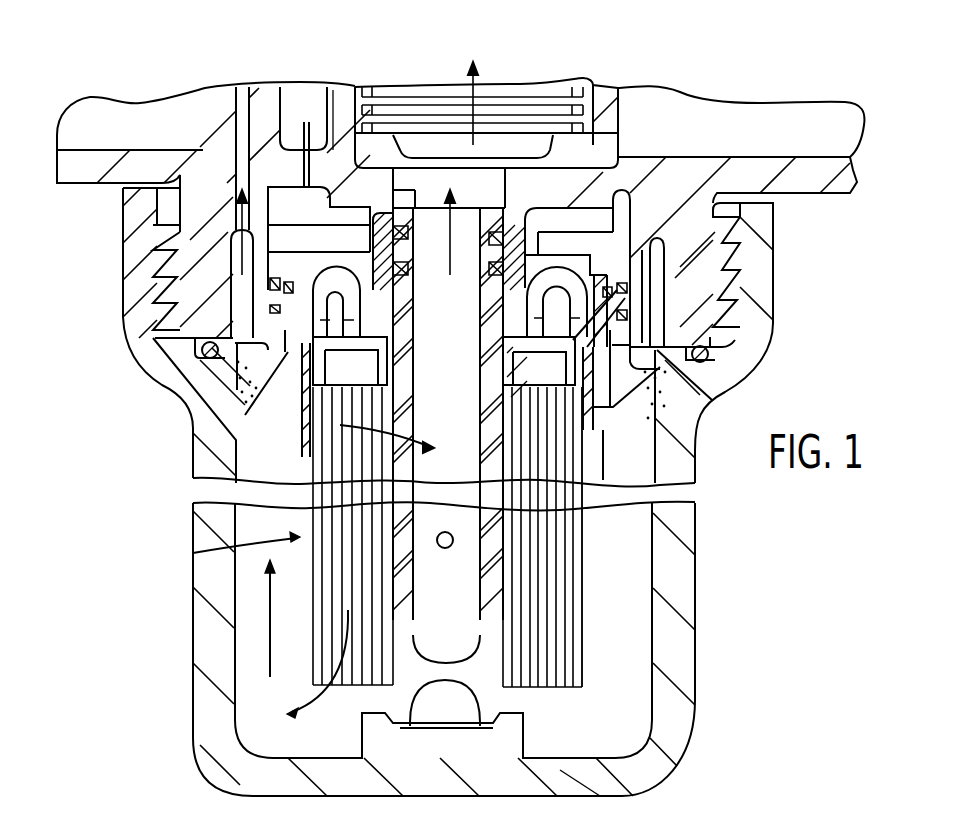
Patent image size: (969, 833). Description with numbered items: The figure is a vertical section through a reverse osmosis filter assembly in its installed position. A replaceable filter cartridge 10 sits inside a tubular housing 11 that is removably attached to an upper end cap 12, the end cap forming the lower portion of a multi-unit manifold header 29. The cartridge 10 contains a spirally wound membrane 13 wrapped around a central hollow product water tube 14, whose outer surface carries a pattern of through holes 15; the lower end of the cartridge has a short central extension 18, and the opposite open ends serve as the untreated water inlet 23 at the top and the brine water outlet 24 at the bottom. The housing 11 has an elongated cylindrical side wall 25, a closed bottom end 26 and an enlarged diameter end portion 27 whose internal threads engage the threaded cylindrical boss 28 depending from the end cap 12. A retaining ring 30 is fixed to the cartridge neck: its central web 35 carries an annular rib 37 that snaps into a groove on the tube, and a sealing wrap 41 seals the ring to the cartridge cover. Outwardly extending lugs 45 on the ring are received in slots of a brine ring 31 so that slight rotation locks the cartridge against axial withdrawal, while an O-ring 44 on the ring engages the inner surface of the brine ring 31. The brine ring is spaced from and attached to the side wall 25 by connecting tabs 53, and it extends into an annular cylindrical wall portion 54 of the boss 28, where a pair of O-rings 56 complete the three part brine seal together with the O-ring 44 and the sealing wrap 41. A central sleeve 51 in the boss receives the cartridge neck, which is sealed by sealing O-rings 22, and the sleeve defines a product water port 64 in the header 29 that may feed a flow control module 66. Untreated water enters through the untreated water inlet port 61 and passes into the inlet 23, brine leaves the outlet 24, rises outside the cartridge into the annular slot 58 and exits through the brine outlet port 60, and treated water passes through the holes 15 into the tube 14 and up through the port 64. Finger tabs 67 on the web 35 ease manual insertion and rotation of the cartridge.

The filter cartridge 10 is at (232, 556).
The tubular housing 11 is at (193, 690).
The upper end cap 12 is at (705, 158).
The membrane 13 is at (557, 645).
The product water tube 14 is at (490, 545).
The through holes 15 is at (405, 600).
The central extension 18 is at (492, 708).
The sealing O-rings 22 is at (505, 246).
The untreated water inlet 23 is at (300, 382).
The brine water outlet 24 is at (352, 690).
The cylindrical side wall 25 is at (680, 563).
The closed bottom end 26 is at (580, 790).
The enlarged diameter end portion 27 is at (763, 278).
The cylindrical boss 28 is at (150, 268).
The manifold header 29 is at (343, 96).
The retaining ring 30 is at (543, 380).
The brine ring 31 is at (647, 402).
The central web 35 is at (525, 345).
The annular rib 37 is at (400, 378).
The sealing wrap 41 is at (585, 450).
The O-ring 44 is at (410, 296).
The lugs 45 is at (633, 215).
The central sleeve 51 is at (393, 208).
The connecting tabs 53 is at (255, 392).
The annular cylindrical wall portion 54 is at (635, 282).
The O-rings 56 is at (268, 310).
The annular slot 58 is at (650, 318).
The brine outlet port 60 is at (243, 175).
The untreated water inlet port 61 is at (316, 246).
The product water port 64 is at (500, 243).
The flow control module 66 is at (430, 115).
The finger tabs 67 is at (327, 272).